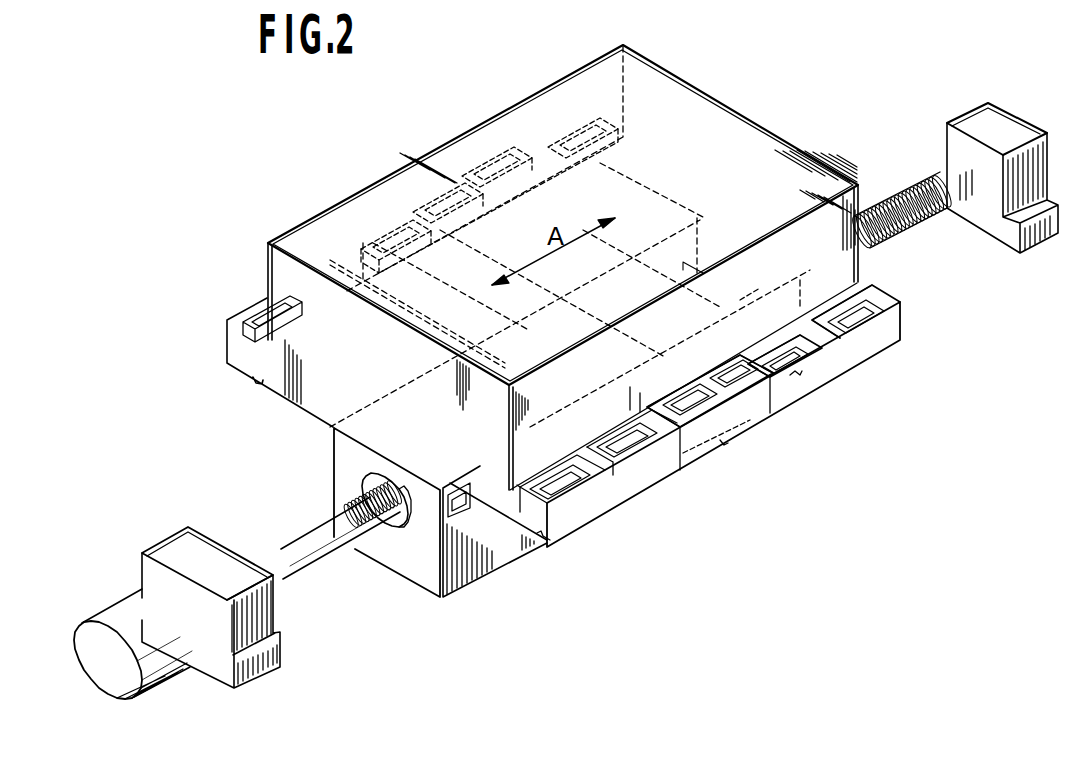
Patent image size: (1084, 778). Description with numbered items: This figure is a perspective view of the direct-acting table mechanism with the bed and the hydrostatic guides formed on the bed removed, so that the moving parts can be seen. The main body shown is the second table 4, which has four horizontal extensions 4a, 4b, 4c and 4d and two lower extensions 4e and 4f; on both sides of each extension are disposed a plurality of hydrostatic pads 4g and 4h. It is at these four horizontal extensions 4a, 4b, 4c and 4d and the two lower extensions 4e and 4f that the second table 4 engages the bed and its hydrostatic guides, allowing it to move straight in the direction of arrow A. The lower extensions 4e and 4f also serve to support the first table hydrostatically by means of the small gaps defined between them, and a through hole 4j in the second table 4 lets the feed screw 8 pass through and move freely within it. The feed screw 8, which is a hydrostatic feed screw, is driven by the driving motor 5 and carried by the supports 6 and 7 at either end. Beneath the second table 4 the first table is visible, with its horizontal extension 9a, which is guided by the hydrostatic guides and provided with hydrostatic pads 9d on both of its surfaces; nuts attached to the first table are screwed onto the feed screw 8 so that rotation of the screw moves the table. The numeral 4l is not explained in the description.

The second table 4 is at (652, 88).
The horizontal extension 4a is at (533, 523).
The horizontal extension 4b is at (870, 347).
The horizontal extension 4c is at (230, 347).
The horizontal extension 4d is at (548, 135).
The lower extension 4e is at (452, 587).
The lower extension 4f is at (757, 273).
The hydrostatic pad 4g is at (256, 300).
The hydrostatic pad 4h is at (455, 500).
The through hole 4j is at (400, 523).
The recess 4l is at (657, 427).
The driving motor 5 is at (172, 662).
The support 6 is at (257, 623).
The support 7 is at (982, 122).
The feed screw 8 is at (323, 547).
The horizontal extension 9a is at (723, 420).
The hydrostatic pad 9d is at (780, 402).